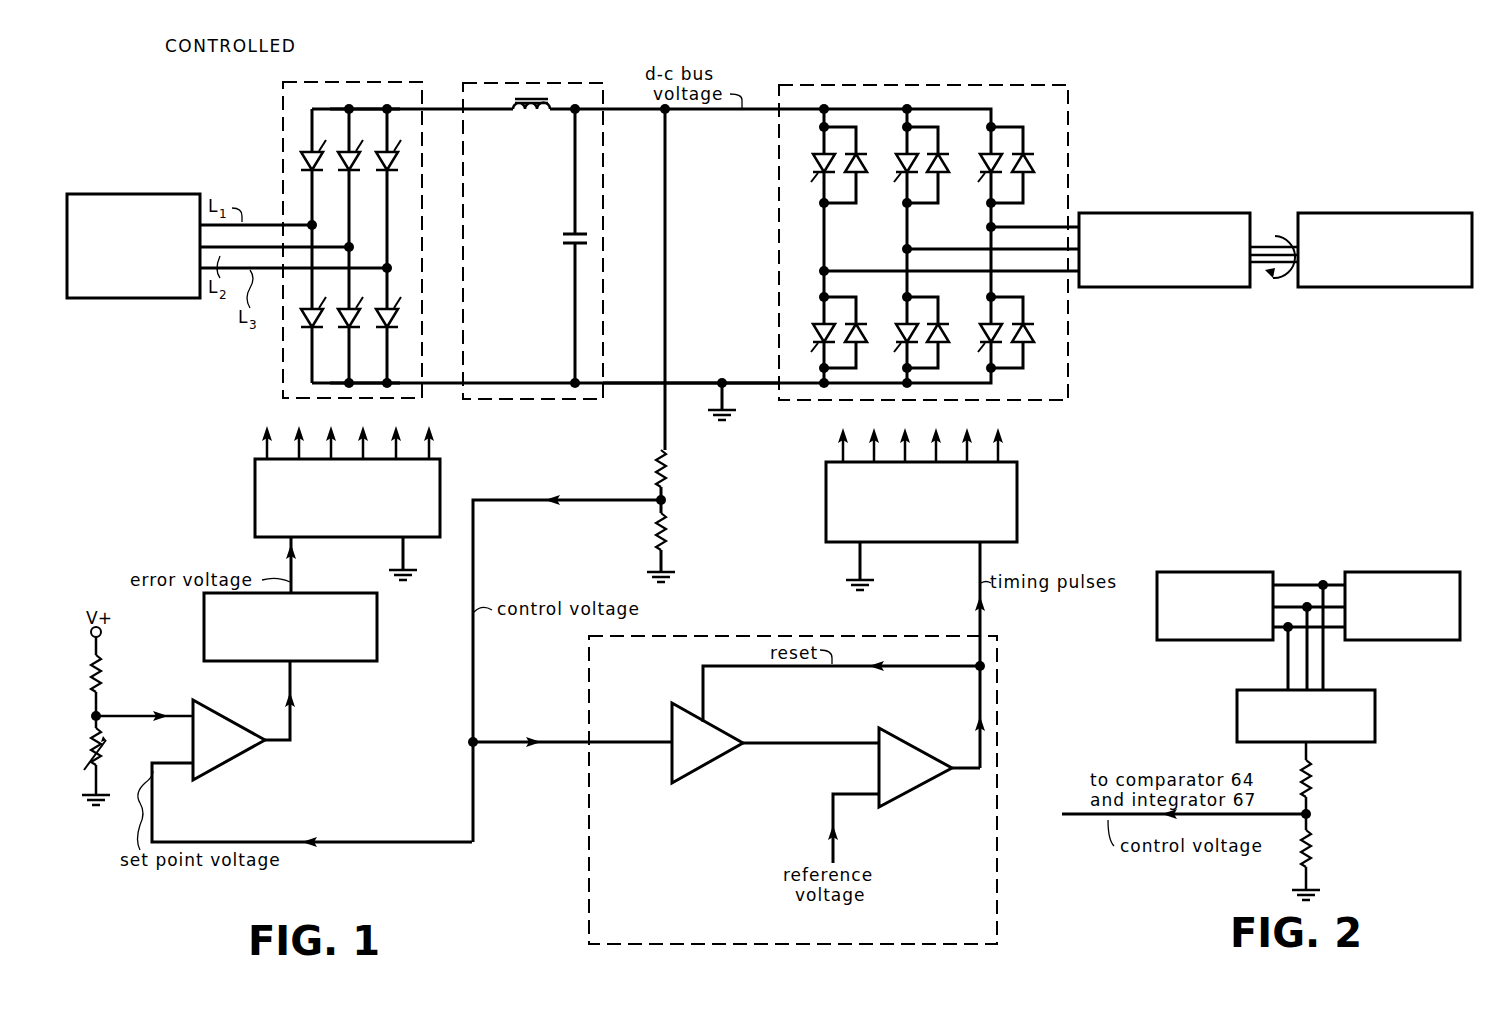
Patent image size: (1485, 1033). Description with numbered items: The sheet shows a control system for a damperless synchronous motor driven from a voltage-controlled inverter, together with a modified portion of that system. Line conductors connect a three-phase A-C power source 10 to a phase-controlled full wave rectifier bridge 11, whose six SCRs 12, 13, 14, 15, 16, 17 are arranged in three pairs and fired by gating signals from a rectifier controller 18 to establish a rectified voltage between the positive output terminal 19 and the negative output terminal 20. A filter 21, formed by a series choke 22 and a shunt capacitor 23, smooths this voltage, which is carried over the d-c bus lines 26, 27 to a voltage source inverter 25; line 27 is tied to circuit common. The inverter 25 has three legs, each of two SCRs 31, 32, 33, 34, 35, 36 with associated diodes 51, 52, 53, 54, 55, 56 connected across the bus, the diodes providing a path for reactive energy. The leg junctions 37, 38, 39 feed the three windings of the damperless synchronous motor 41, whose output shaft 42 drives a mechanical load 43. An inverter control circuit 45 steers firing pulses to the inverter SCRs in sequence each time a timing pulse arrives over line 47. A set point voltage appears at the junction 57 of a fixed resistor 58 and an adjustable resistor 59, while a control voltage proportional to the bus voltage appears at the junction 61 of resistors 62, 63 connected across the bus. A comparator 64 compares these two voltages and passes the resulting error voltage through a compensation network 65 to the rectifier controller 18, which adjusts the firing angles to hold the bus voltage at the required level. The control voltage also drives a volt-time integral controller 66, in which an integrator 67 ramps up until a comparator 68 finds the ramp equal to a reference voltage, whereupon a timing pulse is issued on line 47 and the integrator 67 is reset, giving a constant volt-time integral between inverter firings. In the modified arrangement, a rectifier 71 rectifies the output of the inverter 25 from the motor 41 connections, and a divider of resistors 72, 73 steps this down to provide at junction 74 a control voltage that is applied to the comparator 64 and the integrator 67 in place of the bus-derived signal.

In FIG. 1, the three-phase A-C power source 10 is at (124, 194).
In FIG. 1, the phase-controlled full wave rectifier bridge 11 is at (415, 82).
In FIG. 1, the silicon controlled rectifier 12 is at (323, 169).
In FIG. 1, the silicon controlled rectifier 13 is at (360, 169).
In FIG. 1, the silicon controlled rectifier 14 is at (398, 169).
In FIG. 1, the silicon controlled rectifier 15 is at (323, 326).
In FIG. 1, the silicon controlled rectifier 16 is at (360, 326).
In FIG. 1, the silicon controlled rectifier 17 is at (398, 326).
In FIG. 1, the rectifier controller 18 is at (255, 498).
In FIG. 1, the positive output terminal 19 is at (387, 109).
In FIG. 1, the negative output terminal 20 is at (387, 383).
In FIG. 1, the filter 21 is at (570, 82).
In FIG. 1, the choke 22 is at (534, 115).
In FIG. 1, the capacitor 23 is at (562, 238).
In FIG. 1, the voltage source inverter 25 is at (1000, 84).
In FIG. 2, the voltage source inverter 25 is at (1234, 571).
In FIG. 1, the d-c bus line 26 is at (640, 110).
In FIG. 1, the d-c bus line 27 is at (638, 383).
In FIG. 1, the inverter SCR 31 is at (816, 155).
In FIG. 1, the inverter SCR 32 is at (900, 155).
In FIG. 1, the inverter SCR 33 is at (984, 155).
In FIG. 1, the inverter SCR 34 is at (816, 325).
In FIG. 1, the inverter SCR 35 is at (900, 325).
In FIG. 1, the inverter SCR 36 is at (984, 325).
In FIG. 1, the circuit junction 37 is at (820, 271).
In FIG. 1, the circuit junction 38 is at (905, 248).
In FIG. 1, the circuit junction 39 is at (988, 226).
In FIG. 1, the damperless synchronous motor 41 is at (1160, 213).
In FIG. 2, the damperless synchronous motor 41 is at (1420, 571).
In FIG. 1, the output shaft 42 is at (1274, 240).
In FIG. 1, the mechanical load 43 is at (1380, 213).
In FIG. 1, the inverter control circuit 45 is at (826, 500).
In FIG. 1, the timing pulse line 47 is at (980, 563).
In FIG. 1, the diode 51 is at (858, 174).
In FIG. 1, the diode 52 is at (940, 174).
In FIG. 1, the diode 53 is at (1025, 174).
In FIG. 1, the diode 54 is at (858, 344).
In FIG. 1, the diode 55 is at (940, 344).
In FIG. 1, the diode 56 is at (1025, 344).
In FIG. 1, the circuit junction 57 is at (100, 722).
In FIG. 1, the fixed resistor 58 is at (102, 672).
In FIG. 1, the adjustable resistor 59 is at (102, 762).
In FIG. 1, the circuit junction 61 is at (656, 494).
In FIG. 1, the resistor 62 is at (668, 462).
In FIG. 1, the resistor 63 is at (668, 527).
In FIG. 1, the comparator 64 is at (230, 762).
In FIG. 1, the compensation network 65 is at (350, 661).
In FIG. 1, the volt-time integral controller 66 is at (997, 908).
In FIG. 1, the integrator 67 is at (720, 728).
In FIG. 1, the comparator 68 is at (912, 792).
In FIG. 2, the rectifier 71 is at (1378, 722).
In FIG. 2, the resistor 72 is at (1312, 777).
In FIG. 2, the resistor 73 is at (1312, 847).
In FIG. 2, the circuit junction 74 is at (1312, 812).